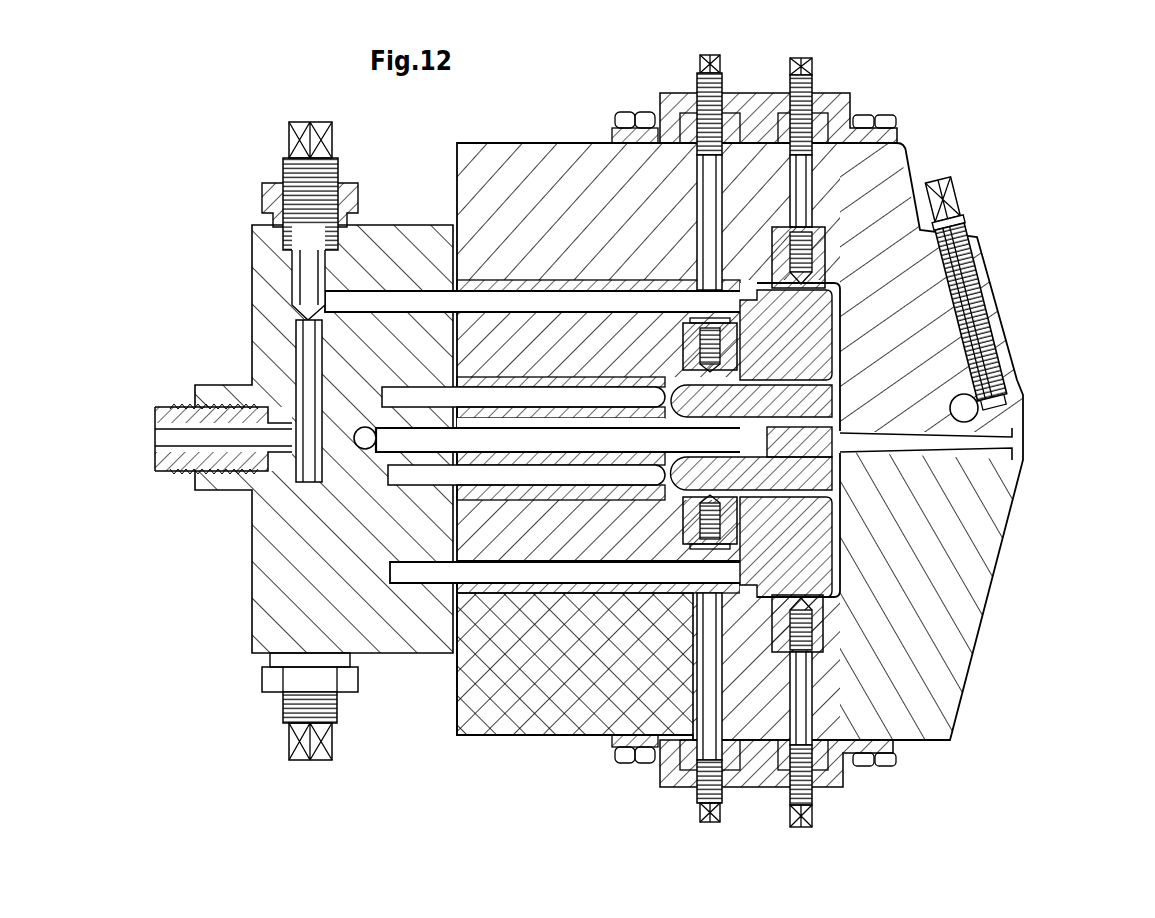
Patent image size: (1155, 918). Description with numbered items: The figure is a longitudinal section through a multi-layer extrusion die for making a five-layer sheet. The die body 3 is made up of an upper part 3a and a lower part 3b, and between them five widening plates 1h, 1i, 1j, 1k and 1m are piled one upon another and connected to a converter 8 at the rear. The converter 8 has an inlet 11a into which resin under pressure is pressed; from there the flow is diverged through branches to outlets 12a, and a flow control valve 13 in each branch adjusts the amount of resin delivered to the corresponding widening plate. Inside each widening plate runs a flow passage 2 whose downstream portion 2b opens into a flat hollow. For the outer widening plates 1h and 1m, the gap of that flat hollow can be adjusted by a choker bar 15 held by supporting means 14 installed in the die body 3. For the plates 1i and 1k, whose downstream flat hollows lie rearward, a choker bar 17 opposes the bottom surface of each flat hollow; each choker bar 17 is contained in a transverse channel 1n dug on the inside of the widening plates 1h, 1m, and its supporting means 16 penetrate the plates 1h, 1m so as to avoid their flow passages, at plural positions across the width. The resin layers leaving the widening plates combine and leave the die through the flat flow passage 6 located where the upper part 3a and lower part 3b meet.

The widening plate 1h is at (889, 314).
The widening plate 1i is at (865, 370).
The widening plate 1j is at (912, 509).
The widening plate 1k is at (860, 541).
The widening plate 1m is at (883, 609).
The channel 1n is at (651, 432).
The flow passage 2 is at (533, 477).
The downstream portion 2b is at (765, 290).
The die body 3 is at (760, 441).
The upper part 3a is at (740, 262).
The lower part 3b is at (848, 619).
The flat flow passage 6 is at (955, 477).
The converter 8 is at (324, 397).
The inlet 11a is at (221, 473).
The outlet 12a is at (541, 448).
The flow control valve 13 is at (325, 448).
The supporting means 14 is at (816, 81).
The choker bar 15 is at (968, 466).
The supporting means 16 is at (698, 79).
The choker bar 17 is at (683, 358).